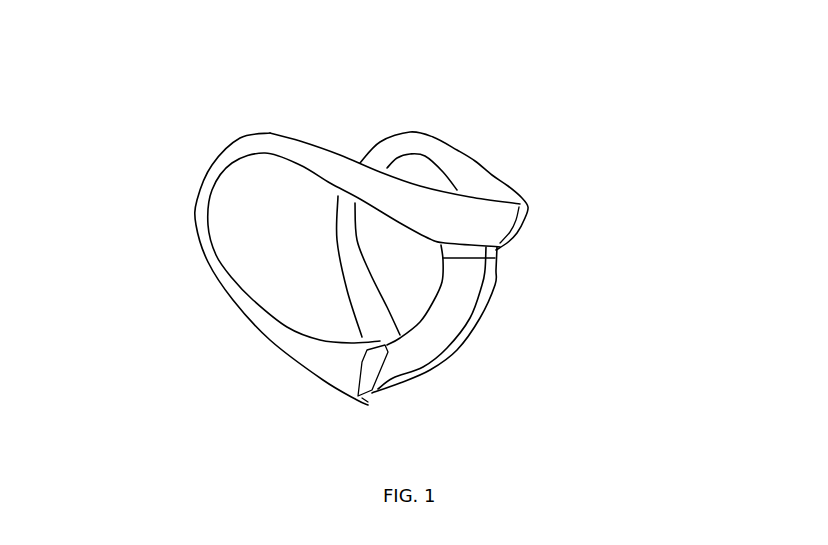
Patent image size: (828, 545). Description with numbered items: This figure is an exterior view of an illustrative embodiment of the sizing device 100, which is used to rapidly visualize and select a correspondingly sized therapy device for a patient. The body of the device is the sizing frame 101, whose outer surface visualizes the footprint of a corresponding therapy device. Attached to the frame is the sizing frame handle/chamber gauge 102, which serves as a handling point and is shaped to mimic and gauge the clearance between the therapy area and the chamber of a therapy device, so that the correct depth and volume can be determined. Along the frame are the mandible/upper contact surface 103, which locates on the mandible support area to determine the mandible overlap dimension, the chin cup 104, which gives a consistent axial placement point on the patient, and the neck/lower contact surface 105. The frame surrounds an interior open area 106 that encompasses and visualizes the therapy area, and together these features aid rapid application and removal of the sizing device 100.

The sizing device 100 is at (383, 275).
The sizing frame 101 is at (297, 342).
The sizing frame handle/chamber gauge 102 is at (447, 317).
The contact surface 103 is at (417, 144).
The chin cup 104 is at (490, 193).
The neck/lower contact surface 105 is at (353, 290).
The open area interior of the frame 106 is at (293, 237).